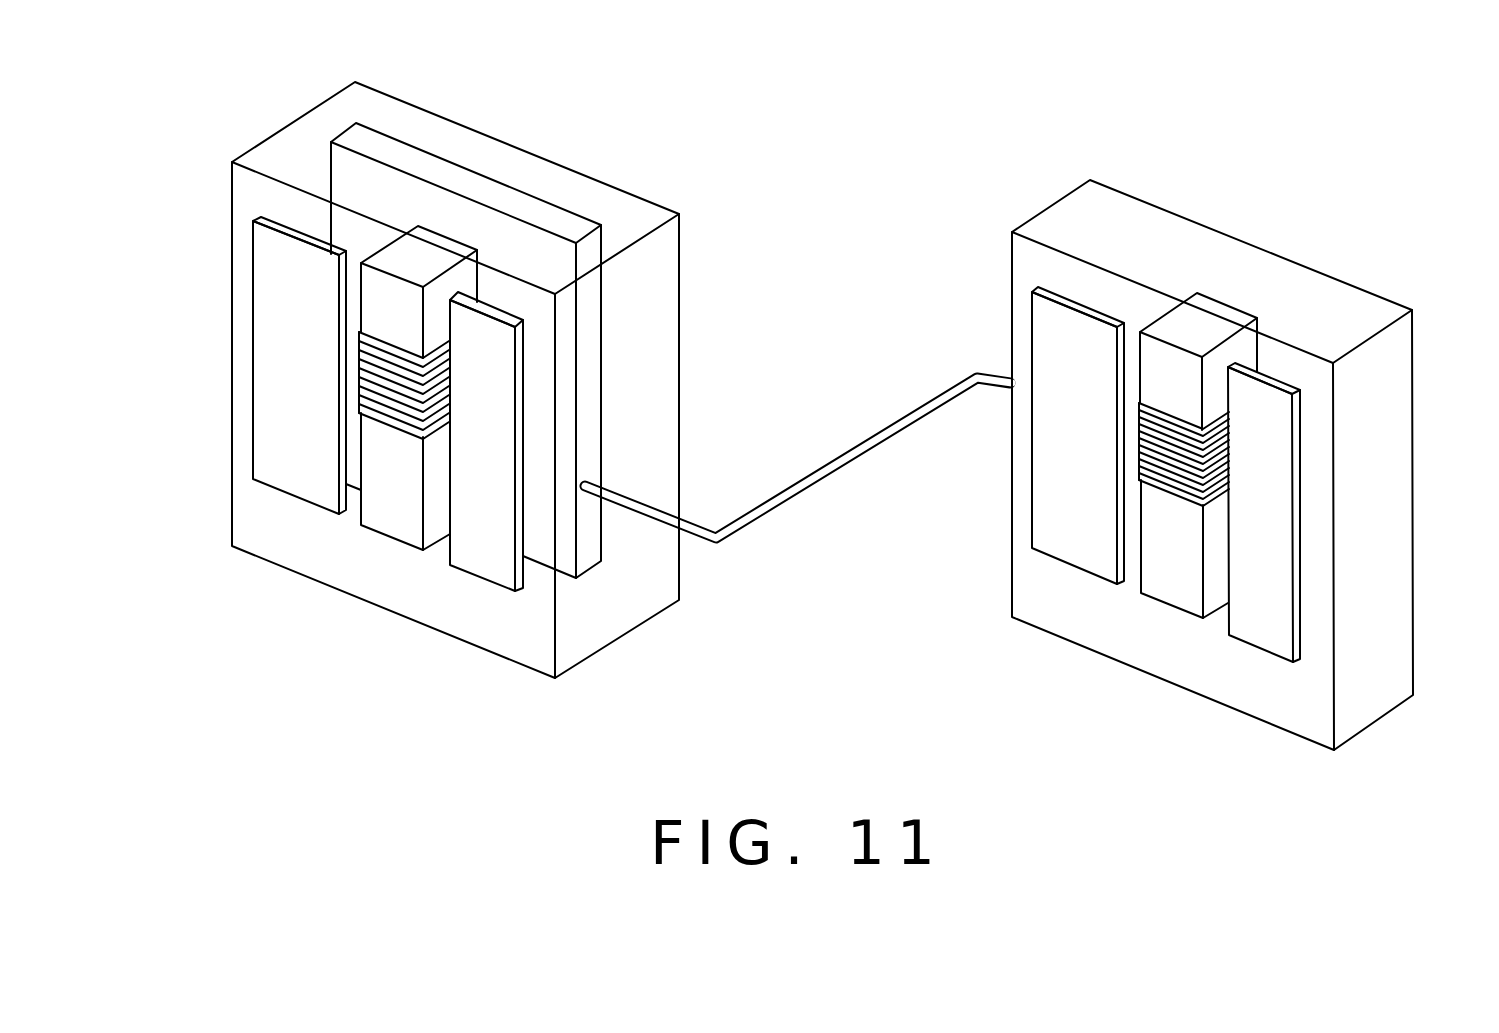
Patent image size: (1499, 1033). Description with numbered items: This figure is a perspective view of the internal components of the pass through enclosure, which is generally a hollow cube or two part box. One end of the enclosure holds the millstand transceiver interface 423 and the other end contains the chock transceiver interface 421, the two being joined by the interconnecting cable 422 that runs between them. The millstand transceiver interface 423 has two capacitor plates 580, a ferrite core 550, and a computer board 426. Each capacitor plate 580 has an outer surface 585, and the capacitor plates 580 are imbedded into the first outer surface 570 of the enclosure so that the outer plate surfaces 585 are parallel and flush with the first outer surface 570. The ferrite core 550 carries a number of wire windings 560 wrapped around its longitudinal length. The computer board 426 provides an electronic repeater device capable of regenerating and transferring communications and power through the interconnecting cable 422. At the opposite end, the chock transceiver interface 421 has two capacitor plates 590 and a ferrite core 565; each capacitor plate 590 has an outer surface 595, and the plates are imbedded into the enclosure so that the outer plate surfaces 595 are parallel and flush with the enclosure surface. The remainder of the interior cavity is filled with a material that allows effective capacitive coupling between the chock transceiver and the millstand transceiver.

The chock transceiver interface 421 is at (1133, 192).
The interconnecting cable 422 is at (824, 463).
The millstand transceiver interface 423 is at (413, 102).
The computer board 426 is at (537, 195).
The ferrite core 550 is at (382, 518).
The wire windings 560 is at (393, 412).
The ferrite core 565 is at (1222, 300).
The first outer surface 570 is at (262, 204).
The capacitor plates 580 is at (253, 277).
The outer surface 585 is at (278, 367).
The capacitor plates 590 is at (1030, 450).
The outer surface 595 is at (1085, 507).